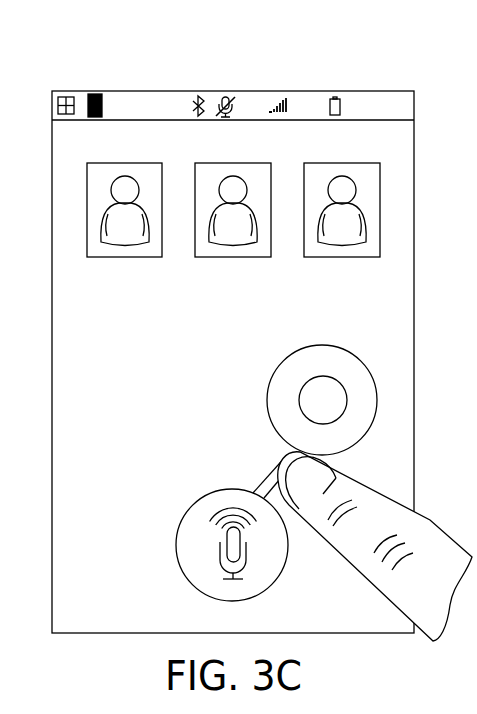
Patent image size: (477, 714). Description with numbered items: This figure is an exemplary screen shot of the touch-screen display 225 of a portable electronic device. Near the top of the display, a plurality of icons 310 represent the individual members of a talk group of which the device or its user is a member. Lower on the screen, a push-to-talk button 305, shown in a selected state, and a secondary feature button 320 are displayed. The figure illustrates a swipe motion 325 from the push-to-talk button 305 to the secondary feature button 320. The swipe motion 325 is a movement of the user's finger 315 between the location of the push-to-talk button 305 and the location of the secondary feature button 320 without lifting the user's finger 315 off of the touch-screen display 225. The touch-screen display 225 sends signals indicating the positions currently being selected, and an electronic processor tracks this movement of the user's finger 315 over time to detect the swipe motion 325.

The touch-screen display 225 is at (233, 90).
The plurality of icons 310 is at (74, 176).
The secondary feature button 320 is at (284, 362).
The swipe motion 325 is at (270, 473).
The push-to-talk button 305 is at (192, 506).
The user's finger 315 is at (378, 496).